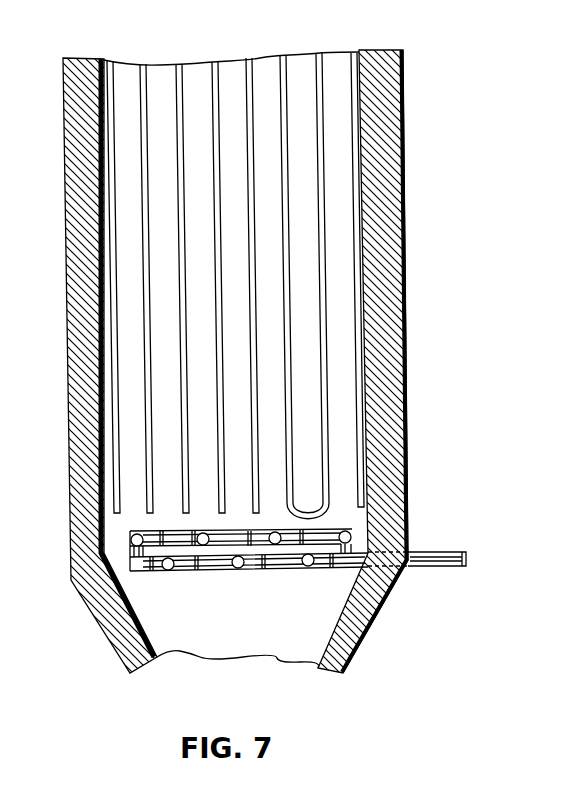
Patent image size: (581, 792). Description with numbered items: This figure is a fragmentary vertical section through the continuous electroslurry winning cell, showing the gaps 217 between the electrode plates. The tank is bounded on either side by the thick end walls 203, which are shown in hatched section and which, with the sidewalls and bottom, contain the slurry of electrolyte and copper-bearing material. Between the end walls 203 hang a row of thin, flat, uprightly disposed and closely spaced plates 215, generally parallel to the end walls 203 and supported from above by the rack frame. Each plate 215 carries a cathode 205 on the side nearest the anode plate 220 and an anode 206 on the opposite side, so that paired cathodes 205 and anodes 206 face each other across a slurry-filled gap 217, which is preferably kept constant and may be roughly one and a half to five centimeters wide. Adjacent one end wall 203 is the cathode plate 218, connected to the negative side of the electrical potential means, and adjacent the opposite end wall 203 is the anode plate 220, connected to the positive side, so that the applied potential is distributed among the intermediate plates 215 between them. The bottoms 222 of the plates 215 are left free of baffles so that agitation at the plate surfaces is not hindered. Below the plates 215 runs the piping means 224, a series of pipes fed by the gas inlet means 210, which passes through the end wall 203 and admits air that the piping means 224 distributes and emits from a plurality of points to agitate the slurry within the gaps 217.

The end wall 203 is at (68, 384).
The cathode 205 is at (320, 144).
The anode 206 is at (320, 144).
The gas inlet means 210 is at (453, 553).
The plate 215 is at (214, 62).
The gap 217 is at (237, 405).
The cathode plate 218 is at (110, 61).
The anode plate 220 is at (355, 52).
The bottoms of the plates 222 is at (221, 513).
The piping means 224 is at (272, 572).